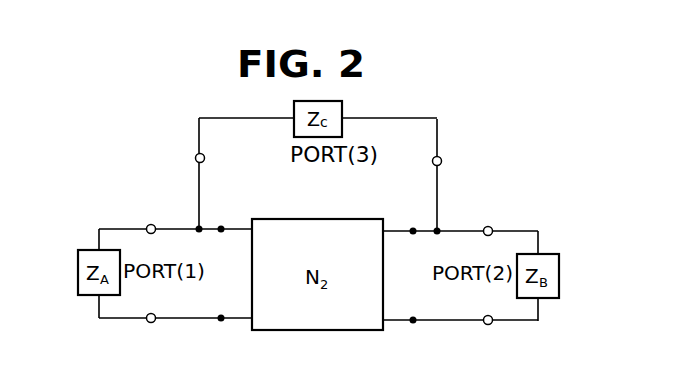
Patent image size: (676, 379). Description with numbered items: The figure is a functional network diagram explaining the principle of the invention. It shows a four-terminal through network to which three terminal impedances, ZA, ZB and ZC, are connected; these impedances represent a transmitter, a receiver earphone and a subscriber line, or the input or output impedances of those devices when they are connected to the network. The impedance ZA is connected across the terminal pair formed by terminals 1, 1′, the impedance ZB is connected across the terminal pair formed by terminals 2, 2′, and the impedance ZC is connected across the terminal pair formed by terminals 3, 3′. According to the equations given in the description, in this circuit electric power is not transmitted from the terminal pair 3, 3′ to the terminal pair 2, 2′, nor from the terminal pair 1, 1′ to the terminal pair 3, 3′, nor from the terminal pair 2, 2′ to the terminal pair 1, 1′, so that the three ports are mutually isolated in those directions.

The terminal 1 is at (153, 215).
The terminal 1' is at (155, 330).
The terminal 2 is at (488, 218).
The terminal 2' is at (491, 334).
The terminal 3 is at (190, 160).
The terminal 3' is at (447, 159).